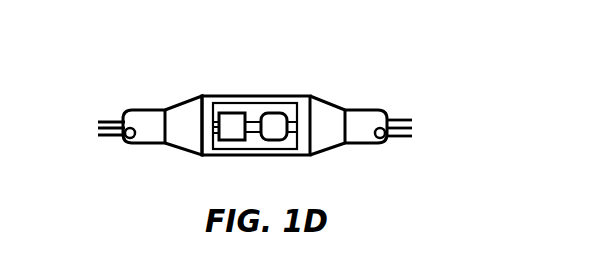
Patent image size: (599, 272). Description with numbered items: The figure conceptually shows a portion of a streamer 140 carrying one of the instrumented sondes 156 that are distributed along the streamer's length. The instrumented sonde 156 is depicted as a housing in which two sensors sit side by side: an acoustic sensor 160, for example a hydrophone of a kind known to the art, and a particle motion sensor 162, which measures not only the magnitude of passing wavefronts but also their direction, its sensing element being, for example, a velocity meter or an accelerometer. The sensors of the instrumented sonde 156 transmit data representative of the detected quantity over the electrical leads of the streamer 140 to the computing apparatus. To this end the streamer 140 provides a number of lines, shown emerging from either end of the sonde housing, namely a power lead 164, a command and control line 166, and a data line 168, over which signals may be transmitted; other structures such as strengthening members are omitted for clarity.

The streamer 140 is at (142, 108).
The instrumented sonde 156 is at (185, 102).
The acoustic sensor 160 is at (275, 112).
The particle motion sensor 162 is at (230, 110).
The power lead 164 is at (412, 118).
The command and control line 166 is at (413, 128).
The data line 168 is at (412, 138).